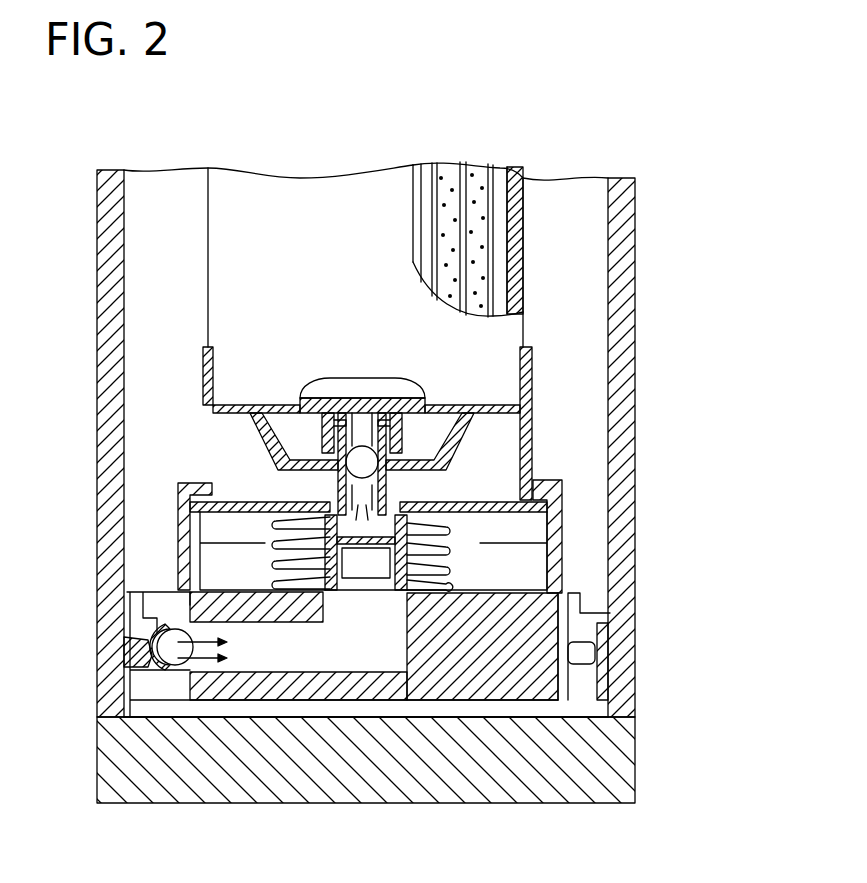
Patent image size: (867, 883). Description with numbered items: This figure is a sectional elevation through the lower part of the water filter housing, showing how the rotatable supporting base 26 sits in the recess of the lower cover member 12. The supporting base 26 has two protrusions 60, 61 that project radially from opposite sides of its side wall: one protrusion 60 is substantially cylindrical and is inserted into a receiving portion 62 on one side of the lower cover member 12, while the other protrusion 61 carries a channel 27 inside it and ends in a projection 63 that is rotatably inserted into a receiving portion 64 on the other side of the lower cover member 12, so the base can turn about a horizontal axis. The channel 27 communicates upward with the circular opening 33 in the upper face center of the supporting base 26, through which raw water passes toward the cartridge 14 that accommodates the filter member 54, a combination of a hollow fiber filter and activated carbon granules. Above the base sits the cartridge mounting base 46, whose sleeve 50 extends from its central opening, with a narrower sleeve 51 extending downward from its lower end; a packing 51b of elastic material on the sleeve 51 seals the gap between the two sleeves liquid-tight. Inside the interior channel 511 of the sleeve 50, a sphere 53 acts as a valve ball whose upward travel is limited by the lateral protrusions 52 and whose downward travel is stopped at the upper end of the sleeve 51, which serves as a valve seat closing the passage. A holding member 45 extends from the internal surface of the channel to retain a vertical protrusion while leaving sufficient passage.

The lower cover member 12 is at (555, 785).
The cartridge 14 is at (232, 270).
The supporting base 26 is at (452, 685).
The channel 27 is at (272, 650).
The circular opening 33 is at (342, 600).
The holding member 45 is at (362, 555).
The cartridge mounting base 46 is at (530, 370).
The sleeve 50 is at (368, 428).
The sleeve 51 is at (335, 462).
The packing 51b is at (330, 498).
The interior channel 511 is at (372, 497).
The lateral protrusions 52 is at (340, 398).
The sphere 53 is at (350, 440).
The filter member 54 is at (480, 198).
The protrusion 60 is at (573, 665).
The protrusion 61 is at (160, 618).
The receiving portion 62 is at (590, 625).
The projection 63 is at (130, 648).
The receiving portion 64 is at (133, 675).